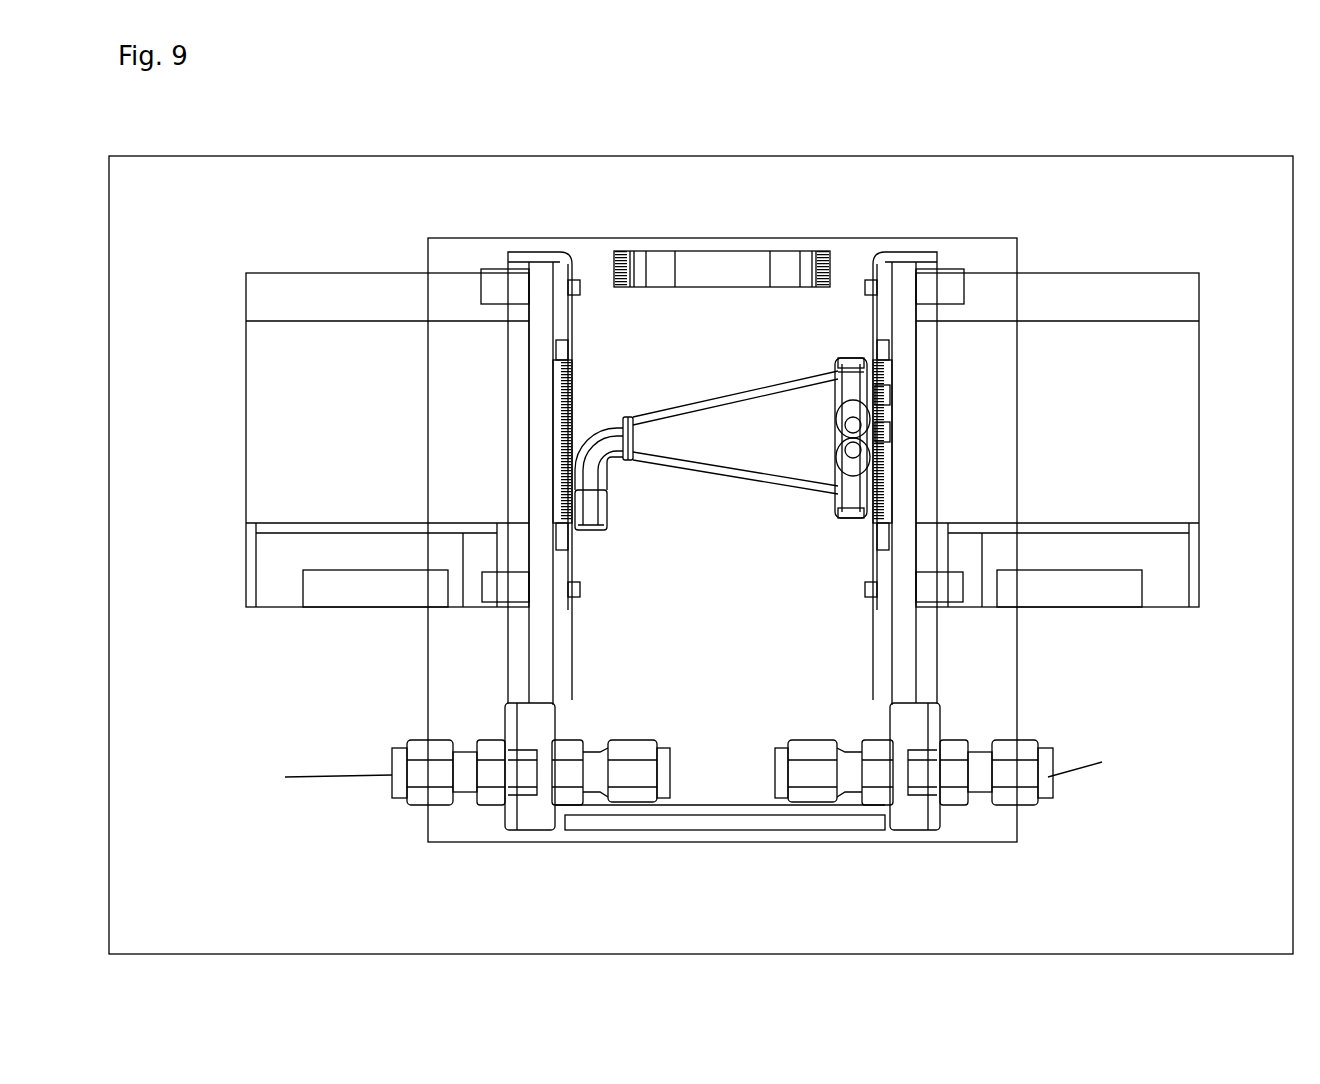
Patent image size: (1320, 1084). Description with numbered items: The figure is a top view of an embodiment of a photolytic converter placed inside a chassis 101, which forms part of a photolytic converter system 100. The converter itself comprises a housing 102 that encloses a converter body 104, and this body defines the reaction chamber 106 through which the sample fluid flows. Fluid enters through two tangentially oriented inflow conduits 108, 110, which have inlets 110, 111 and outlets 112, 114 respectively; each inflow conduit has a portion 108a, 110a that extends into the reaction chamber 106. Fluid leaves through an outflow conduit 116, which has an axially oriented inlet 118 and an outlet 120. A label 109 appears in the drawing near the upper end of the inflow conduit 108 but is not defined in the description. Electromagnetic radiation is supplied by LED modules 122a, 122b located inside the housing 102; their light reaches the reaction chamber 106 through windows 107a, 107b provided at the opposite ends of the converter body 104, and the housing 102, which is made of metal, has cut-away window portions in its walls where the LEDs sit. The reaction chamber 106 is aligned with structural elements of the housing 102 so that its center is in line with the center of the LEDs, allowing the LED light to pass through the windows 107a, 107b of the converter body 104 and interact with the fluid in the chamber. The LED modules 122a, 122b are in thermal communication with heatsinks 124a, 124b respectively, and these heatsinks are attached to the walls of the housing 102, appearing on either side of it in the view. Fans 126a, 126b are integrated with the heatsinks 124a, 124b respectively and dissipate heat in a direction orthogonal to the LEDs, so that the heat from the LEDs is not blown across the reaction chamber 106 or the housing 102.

The photolytic converter system 100 is at (701, 524).
The chassis 101 is at (900, 155).
The housing 102 is at (1018, 693).
The converter body 104 is at (685, 472).
The reaction chamber 106 is at (725, 422).
The window 107a is at (876, 364).
The window 107b is at (630, 432).
The inflow conduit 108 is at (838, 363).
The portion of inflow conduit 108a is at (850, 357).
The capsule top cap 109 is at (846, 358).
The inflow conduit 110 is at (850, 470).
The portion of inflow conduit 110a is at (845, 490).
The inlet 111 is at (850, 518).
The outlet 112 is at (897, 395).
The outlet 114 is at (898, 432).
The outflow conduit 116 is at (601, 422).
The inlet 118 is at (633, 437).
The outlet 120 is at (588, 532).
The LED module 122a is at (895, 470).
The LED module 122b is at (562, 417).
The heatsink 124a is at (1057, 461).
The heatsink 124b is at (387, 469).
The fan 126a is at (1073, 590).
The fan 126b is at (340, 580).